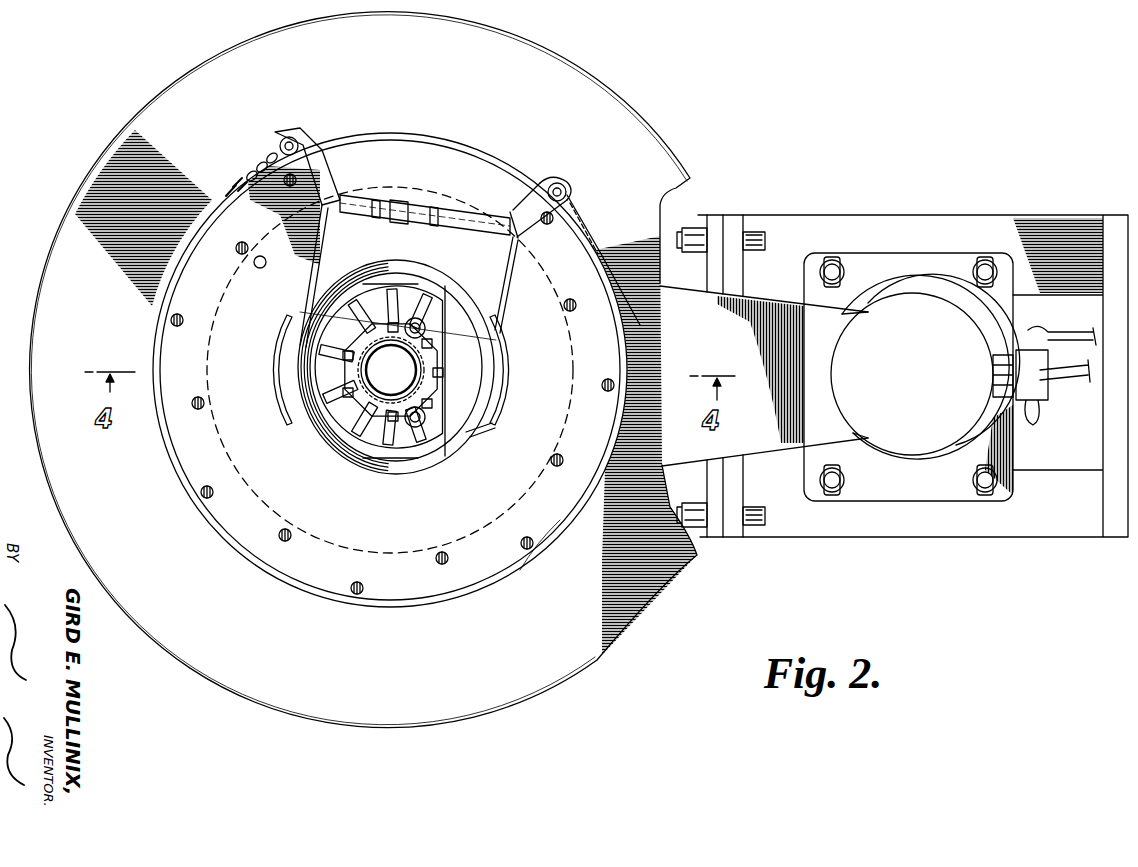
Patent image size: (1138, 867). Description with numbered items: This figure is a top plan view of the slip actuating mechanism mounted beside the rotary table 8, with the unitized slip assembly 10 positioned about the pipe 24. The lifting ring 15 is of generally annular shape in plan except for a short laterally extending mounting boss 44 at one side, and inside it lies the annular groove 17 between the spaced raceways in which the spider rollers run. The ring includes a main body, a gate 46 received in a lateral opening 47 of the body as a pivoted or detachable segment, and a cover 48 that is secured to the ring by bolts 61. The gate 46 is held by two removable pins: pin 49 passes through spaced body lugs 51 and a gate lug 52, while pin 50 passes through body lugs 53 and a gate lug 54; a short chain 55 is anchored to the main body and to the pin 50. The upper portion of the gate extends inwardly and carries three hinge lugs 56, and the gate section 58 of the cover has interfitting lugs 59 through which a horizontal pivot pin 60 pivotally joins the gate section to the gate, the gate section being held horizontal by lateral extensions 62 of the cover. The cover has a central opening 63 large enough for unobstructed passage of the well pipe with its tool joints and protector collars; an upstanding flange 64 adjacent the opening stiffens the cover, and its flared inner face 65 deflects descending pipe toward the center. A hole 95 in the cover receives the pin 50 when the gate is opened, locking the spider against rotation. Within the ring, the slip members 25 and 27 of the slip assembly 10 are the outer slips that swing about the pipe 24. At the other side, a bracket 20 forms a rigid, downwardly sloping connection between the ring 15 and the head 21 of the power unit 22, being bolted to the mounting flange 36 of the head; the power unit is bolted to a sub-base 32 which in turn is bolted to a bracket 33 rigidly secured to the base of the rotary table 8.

The rotary table 8 is at (455, 722).
The unitized slip assembly 10 is at (355, 398).
The lifting ring 15 is at (524, 576).
The annular groove 17 is at (318, 267).
The bracket 20 is at (873, 377).
The head 21 is at (906, 300).
The power unit 22 is at (950, 277).
The pipe 24 is at (391, 370).
The slip member 25 is at (368, 440).
The slip member 27 is at (335, 328).
The sub-base 32 is at (1045, 522).
The bracket 33 is at (717, 530).
The mounting flange 36 is at (828, 418).
The mounting boss 44 is at (745, 376).
The gate 46 is at (468, 166).
The lateral opening 47 is at (524, 204).
The cover 48 is at (538, 524).
The pin 49 is at (565, 188).
The pin 50 is at (289, 136).
The body lugs 51 is at (576, 213).
The gate lug 52 is at (537, 178).
The body lugs 53 is at (278, 142).
The gate lug 54 is at (322, 142).
The chain 55 is at (240, 171).
The hinge lugs 56 is at (398, 222).
The gate section 58 is at (486, 295).
The interfitting lugs 59 is at (416, 204).
The horizontal pivot pin 60 is at (378, 196).
The bolts 61 is at (206, 486).
The lateral extensions 62 is at (492, 338).
The central opening 63 is at (470, 437).
The upstanding flange 64 is at (497, 417).
The inner face 65 is at (503, 390).
The hole 95 is at (262, 268).